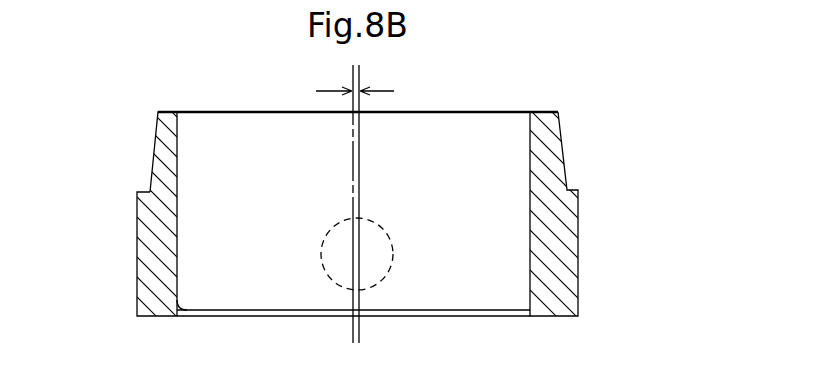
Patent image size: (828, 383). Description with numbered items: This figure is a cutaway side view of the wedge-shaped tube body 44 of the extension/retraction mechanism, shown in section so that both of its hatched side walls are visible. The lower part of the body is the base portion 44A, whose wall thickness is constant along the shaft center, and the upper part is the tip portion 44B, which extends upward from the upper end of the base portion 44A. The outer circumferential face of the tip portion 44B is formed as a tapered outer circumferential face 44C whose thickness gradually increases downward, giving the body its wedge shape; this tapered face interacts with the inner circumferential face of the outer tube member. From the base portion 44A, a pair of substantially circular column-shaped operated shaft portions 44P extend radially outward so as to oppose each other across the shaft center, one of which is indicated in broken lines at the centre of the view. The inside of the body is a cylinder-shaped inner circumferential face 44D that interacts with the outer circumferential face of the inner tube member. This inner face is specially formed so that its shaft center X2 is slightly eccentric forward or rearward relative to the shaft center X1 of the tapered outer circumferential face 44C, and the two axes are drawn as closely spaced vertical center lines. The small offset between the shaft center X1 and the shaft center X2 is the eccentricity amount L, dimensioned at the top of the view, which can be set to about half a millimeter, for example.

The wedge-shaped tube body 44 is at (374, 219).
The base portion 44A is at (153, 259).
The tip portion 44B is at (548, 152).
The tapered outer circumferential face 44C is at (152, 150).
The cylinder-shaped inner circumferential face 44D is at (177, 282).
The operated shaft portion 44P is at (392, 250).
The shaft center of the tapered outer circumferential face X1 is at (360, 182).
The shaft center of the inner circumferential face X2 is at (352, 166).
The eccentricity amount L is at (355, 79).